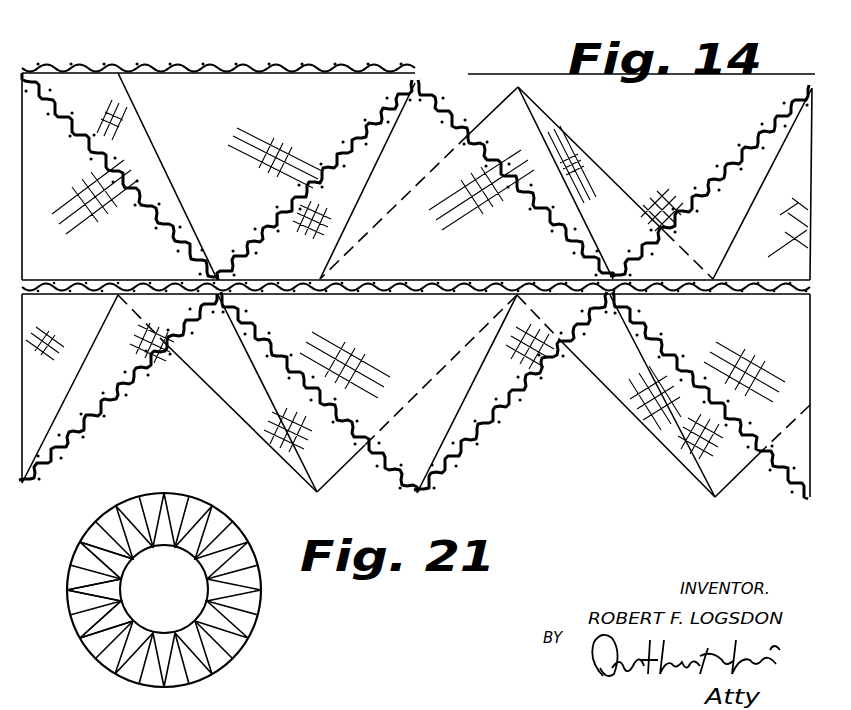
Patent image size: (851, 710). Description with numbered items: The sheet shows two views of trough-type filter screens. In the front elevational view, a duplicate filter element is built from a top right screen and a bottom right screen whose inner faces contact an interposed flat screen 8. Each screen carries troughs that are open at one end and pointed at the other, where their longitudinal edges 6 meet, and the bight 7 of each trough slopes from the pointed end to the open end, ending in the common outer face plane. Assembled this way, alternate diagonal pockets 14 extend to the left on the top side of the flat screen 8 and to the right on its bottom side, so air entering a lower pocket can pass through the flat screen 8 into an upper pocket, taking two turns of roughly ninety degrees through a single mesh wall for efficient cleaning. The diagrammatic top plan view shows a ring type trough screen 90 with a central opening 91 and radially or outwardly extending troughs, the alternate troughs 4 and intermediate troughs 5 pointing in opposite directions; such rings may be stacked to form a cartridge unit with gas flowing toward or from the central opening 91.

In FIG. 14, the alternate diagonal pockets 14 is at (415, 281).
In FIG. 14, the bight 7 is at (165, 161).
In FIG. 21, the bight 7 is at (100, 648).
In FIG. 14, the flat screen 8 is at (75, 280).
In FIG. 21, the alternate troughs 4 is at (80, 556).
In FIG. 21, the intermediate troughs 5 is at (120, 594).
In FIG. 21, the longitudinal edges 6 is at (72, 603).
In FIG. 21, the ring type trough screen 90 is at (251, 546).
In FIG. 21, the central opening 91 is at (176, 578).